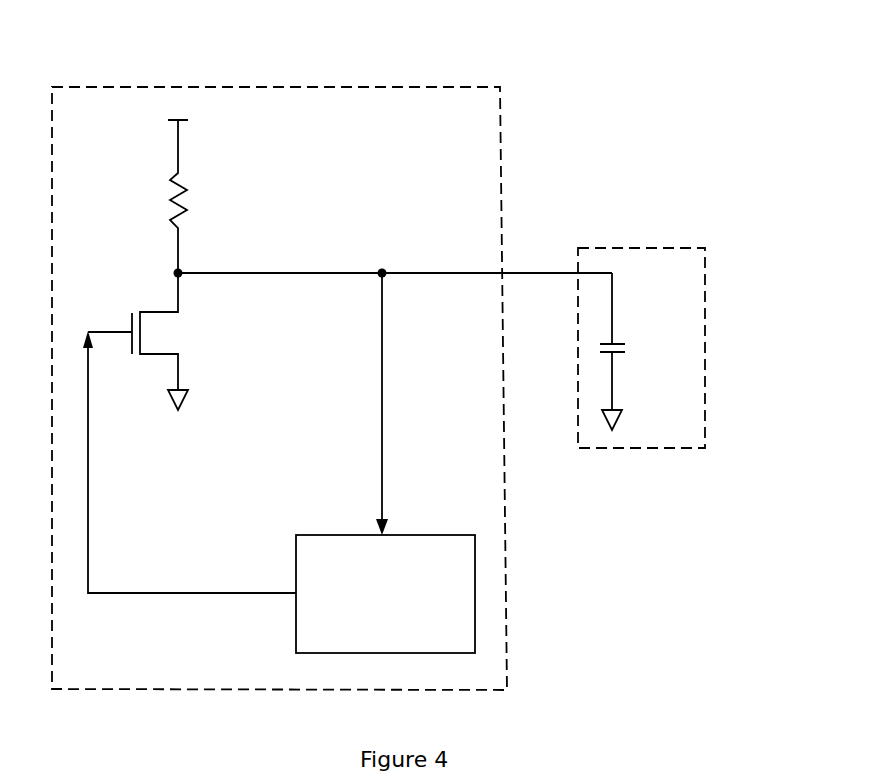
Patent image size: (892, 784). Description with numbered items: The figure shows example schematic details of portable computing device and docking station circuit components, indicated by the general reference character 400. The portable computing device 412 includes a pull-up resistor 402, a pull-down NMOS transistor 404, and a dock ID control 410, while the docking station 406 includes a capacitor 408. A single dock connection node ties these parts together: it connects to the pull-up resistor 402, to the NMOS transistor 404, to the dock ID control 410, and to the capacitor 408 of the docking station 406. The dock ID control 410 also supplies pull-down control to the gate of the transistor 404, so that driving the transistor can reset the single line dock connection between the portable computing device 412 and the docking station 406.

The schematic details of portable computing device and docking station circuit compo 400 is at (598, 51).
The portable computing device 412 is at (410, 84).
The pull-up resistor 402 is at (210, 196).
The pull-down NMOS transistor 404 is at (152, 341).
The docking station 406 is at (588, 248).
The capacitor 408 is at (644, 351).
The dock ID control 410 is at (365, 636).